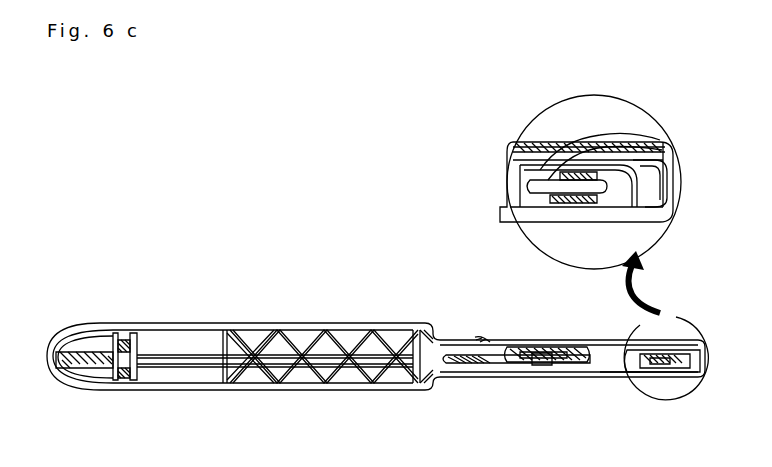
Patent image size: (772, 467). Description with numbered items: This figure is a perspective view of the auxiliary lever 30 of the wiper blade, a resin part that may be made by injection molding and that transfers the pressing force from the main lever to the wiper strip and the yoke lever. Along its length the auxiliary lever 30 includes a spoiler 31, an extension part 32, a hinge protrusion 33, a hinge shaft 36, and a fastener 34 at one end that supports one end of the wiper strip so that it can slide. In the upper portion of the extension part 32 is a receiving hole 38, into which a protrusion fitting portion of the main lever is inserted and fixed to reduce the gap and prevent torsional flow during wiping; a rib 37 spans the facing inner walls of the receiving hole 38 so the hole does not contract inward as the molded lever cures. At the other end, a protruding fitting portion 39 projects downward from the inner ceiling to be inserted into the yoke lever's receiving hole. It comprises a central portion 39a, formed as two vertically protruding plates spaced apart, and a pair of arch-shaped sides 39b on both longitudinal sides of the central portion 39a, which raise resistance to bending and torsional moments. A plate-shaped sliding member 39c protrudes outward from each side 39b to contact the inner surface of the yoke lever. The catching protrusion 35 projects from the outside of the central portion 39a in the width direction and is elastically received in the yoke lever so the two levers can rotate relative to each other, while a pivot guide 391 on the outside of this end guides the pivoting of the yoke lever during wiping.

The auxiliary lever 30 is at (270, 316).
The spoiler 31 is at (320, 356).
The extension part 32 is at (602, 377).
The hinge protrusion 33 is at (477, 338).
The fastener 34 is at (117, 353).
The catching protrusion 35 is at (622, 158).
The hinge shaft 36 is at (498, 372).
The rib 37 is at (545, 365).
The receiving hole 38 is at (557, 343).
The protruding fitting portion 39 is at (517, 198).
The central portion 39a is at (540, 203).
The side 39b is at (523, 175).
The sliding member 39c is at (663, 178).
The pivot guide 391 is at (577, 142).